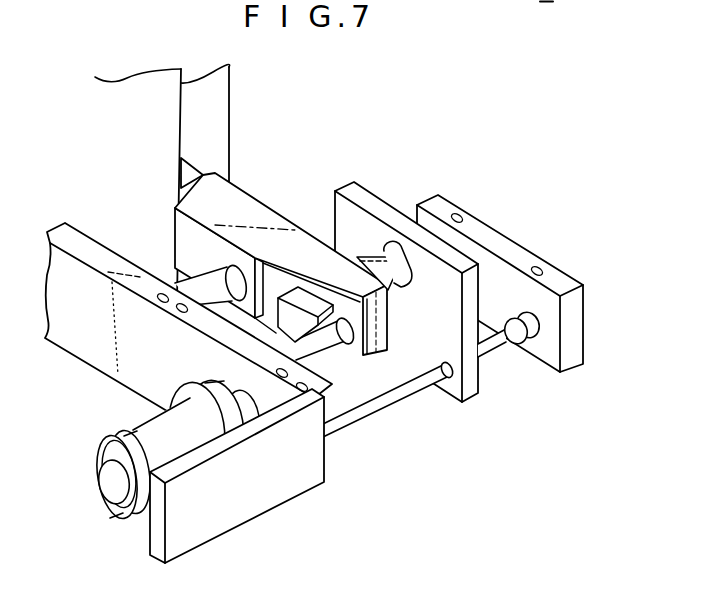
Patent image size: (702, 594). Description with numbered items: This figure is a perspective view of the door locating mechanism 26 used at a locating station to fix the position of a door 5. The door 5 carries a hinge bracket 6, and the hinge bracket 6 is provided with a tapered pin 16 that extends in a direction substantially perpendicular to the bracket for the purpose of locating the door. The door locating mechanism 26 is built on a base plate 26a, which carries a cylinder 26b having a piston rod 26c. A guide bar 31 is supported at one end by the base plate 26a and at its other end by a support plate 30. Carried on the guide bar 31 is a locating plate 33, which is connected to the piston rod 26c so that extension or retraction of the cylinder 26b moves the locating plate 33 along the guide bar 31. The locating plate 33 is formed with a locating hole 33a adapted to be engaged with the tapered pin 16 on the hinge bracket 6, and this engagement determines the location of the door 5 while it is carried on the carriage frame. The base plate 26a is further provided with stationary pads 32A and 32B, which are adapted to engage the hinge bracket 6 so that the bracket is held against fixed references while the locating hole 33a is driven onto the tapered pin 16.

The door 5 is at (220, 127).
The hinge bracket 6 is at (250, 223).
The tapered pin 16 is at (393, 287).
The door locating mechanism 26 is at (487, 400).
The base plate 26a is at (102, 357).
The cylinder 26b is at (205, 428).
The piston rod 26c is at (330, 378).
The support plate 30 is at (514, 252).
The guide bar 31 is at (507, 347).
The stationary pad 32A is at (202, 287).
The stationary pad 32B is at (250, 356).
The locating plate 33 is at (358, 186).
The locating hole 33a is at (400, 240).